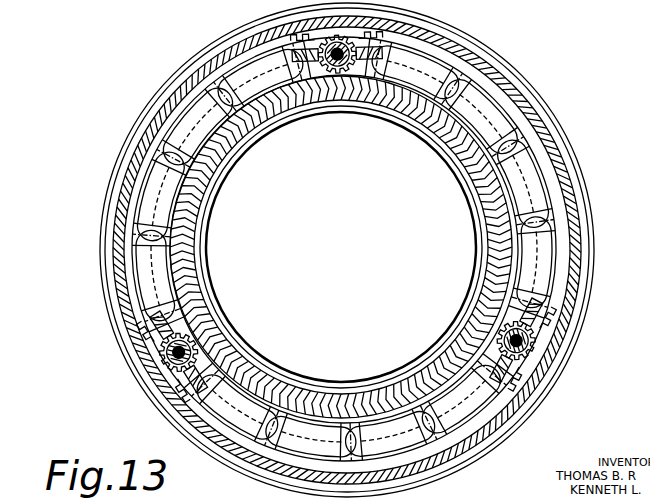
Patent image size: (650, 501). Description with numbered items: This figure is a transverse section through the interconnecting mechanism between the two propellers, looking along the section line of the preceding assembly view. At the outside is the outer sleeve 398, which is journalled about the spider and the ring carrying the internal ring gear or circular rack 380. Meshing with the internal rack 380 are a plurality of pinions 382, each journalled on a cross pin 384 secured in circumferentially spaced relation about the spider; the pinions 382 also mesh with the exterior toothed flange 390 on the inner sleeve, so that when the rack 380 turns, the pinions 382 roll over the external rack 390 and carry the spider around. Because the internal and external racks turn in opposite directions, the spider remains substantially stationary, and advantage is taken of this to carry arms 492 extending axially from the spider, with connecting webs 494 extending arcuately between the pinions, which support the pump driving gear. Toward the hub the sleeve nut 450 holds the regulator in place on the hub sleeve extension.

The ring gear or circular rack 380 is at (530, 383).
The pinions 382 is at (540, 340).
The cross pins 384 is at (533, 357).
The exterior toothed flange 390 is at (500, 320).
The outer sleeve 398 is at (572, 213).
The sleeve nut 450 is at (500, 275).
The arms 492 is at (463, 63).
The connecting webs 494 is at (170, 290).